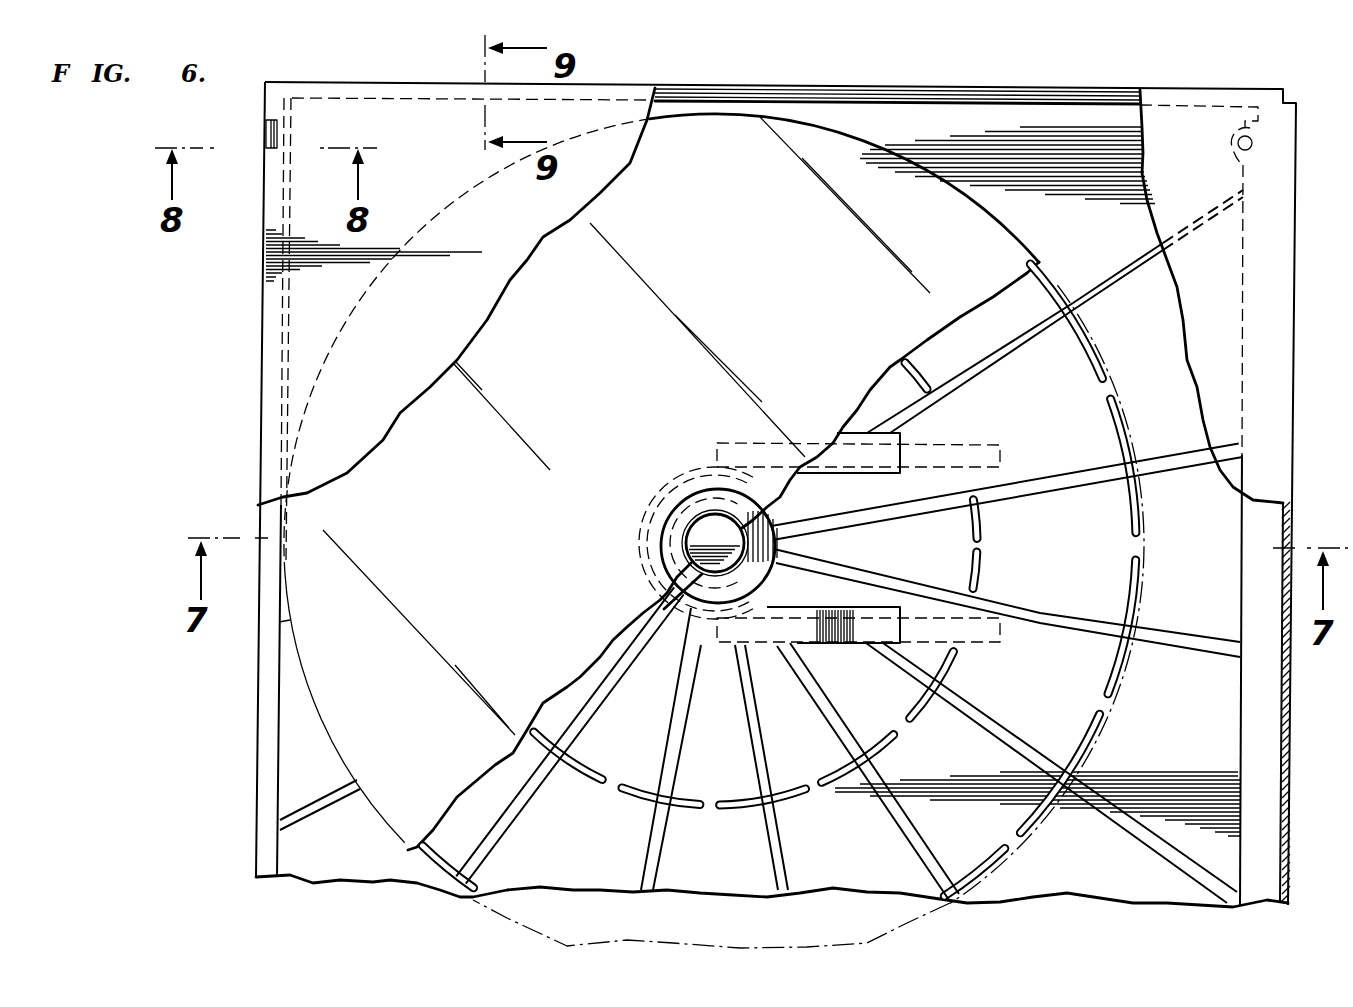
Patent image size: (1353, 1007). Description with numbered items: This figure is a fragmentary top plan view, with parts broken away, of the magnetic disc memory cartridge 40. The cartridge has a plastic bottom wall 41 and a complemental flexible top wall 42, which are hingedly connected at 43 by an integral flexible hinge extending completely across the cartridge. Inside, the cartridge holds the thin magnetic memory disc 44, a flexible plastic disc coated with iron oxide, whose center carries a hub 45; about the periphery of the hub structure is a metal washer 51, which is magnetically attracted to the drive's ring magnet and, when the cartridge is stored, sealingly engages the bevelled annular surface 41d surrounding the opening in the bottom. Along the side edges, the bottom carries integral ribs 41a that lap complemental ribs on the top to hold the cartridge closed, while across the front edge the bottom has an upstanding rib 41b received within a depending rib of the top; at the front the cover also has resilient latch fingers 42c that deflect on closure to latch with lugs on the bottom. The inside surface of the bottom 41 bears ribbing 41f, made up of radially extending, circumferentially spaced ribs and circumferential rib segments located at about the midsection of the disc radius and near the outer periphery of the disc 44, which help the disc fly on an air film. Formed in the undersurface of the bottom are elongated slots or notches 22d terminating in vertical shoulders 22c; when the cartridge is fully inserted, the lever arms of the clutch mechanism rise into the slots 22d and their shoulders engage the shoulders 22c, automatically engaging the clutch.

The magnetic disc memory cartridge 40 is at (250, 318).
The bottom wall 41 is at (343, 870).
The rib on cartridge bottom 41a is at (770, 100).
The upstanding rib 41b is at (282, 752).
The bevelled annular surface 41d is at (662, 606).
The ribbing 41f is at (1130, 520).
The flexible top wall 42 is at (1218, 297).
The resilient latch finger 42c is at (263, 137).
The hinge 43 is at (1292, 525).
The magnetic memory disc 44 is at (701, 495).
The hub 45 is at (738, 547).
The metal washer 51 is at (760, 550).
The vertical shoulder 22c is at (733, 416).
The elongated slot 22d is at (965, 445).